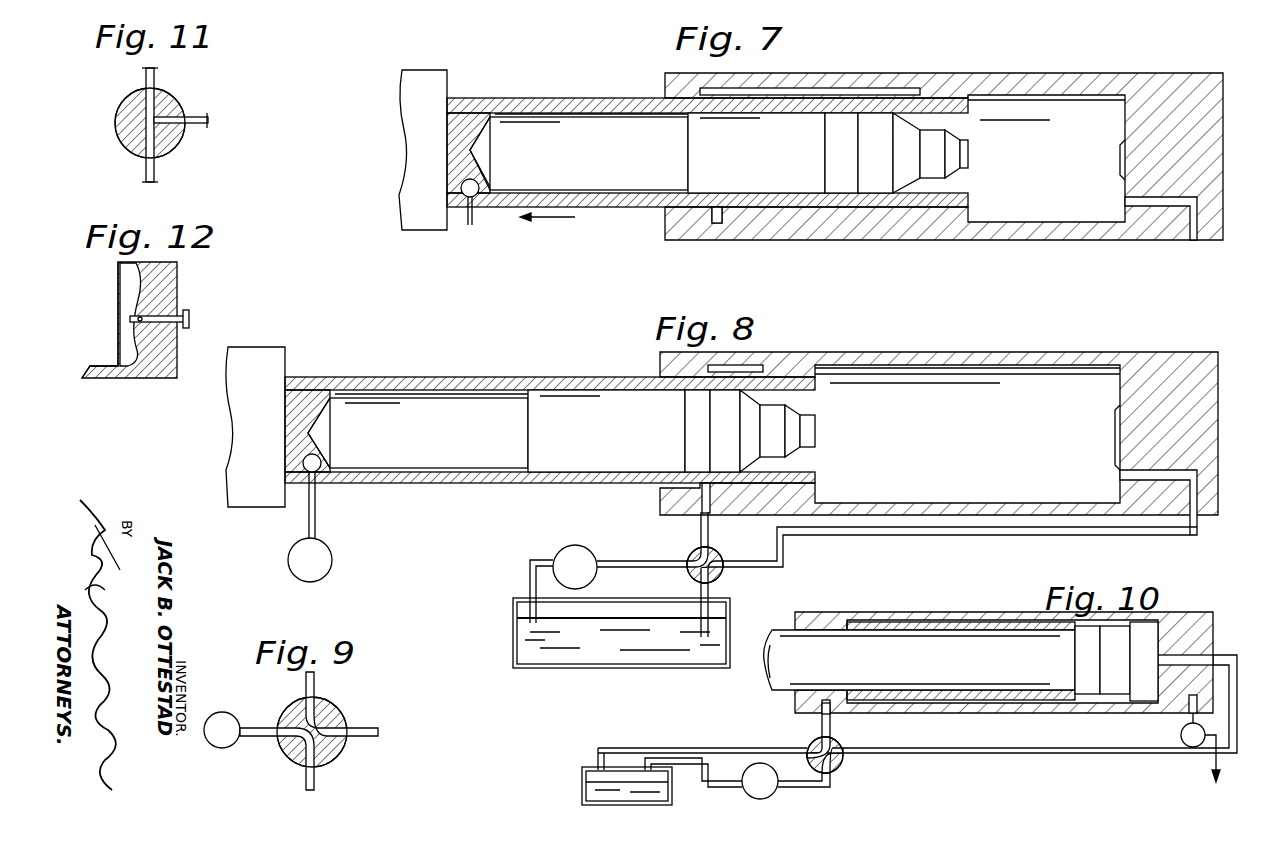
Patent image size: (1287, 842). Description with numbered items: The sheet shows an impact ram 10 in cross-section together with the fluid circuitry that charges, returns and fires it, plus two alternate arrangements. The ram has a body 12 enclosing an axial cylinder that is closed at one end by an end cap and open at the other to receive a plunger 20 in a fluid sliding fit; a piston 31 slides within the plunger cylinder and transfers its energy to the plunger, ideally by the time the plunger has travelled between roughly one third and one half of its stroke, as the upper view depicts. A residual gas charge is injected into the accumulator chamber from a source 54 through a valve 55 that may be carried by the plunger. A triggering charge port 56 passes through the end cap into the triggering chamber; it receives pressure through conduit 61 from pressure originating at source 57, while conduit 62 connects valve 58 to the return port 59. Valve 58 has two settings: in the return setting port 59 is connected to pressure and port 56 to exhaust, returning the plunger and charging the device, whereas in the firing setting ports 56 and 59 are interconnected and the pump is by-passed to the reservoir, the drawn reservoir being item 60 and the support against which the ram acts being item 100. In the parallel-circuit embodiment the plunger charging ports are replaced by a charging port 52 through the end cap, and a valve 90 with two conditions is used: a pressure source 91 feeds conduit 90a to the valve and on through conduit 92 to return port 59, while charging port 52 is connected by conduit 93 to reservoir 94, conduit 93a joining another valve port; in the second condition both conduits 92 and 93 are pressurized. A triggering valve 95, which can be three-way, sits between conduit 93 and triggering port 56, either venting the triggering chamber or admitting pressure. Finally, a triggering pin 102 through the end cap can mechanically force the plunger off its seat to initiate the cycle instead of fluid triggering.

In FIG. 7, the impact ram 10 is at (365, 115).
In FIG. 8, the impact ram 10 is at (378, 340).
In FIG. 7, the body 12 is at (828, 240).
In FIG. 8, the body 12 is at (939, 433).
In FIG. 10, the body 12 is at (1004, 662).
In FIG. 12, the body 12 is at (180, 274).
In FIG. 7, the plunger 20 is at (620, 208).
In FIG. 8, the plunger 20 is at (550, 430).
In FIG. 10, the plunger 20 is at (961, 673).
In FIG. 8, the piston 31 is at (680, 418).
In FIG. 10, the charging port 52 is at (1198, 655).
In FIG. 8, the source 54 is at (333, 560).
In FIG. 8, the valve 55 is at (330, 480).
In FIG. 8, the triggering charge port 56 is at (1203, 470).
In FIG. 10, the triggering charge port 56 is at (1225, 745).
In FIG. 8, the source 57 is at (562, 548).
In FIG. 9, the source 57 is at (210, 748).
In FIG. 8, the valve 58 is at (690, 560).
In FIG. 9, the valve 58 is at (310, 731).
In FIG. 7, the return port 59 is at (717, 223).
In FIG. 8, the return port 59 is at (712, 505).
In FIG. 10, the return port 59 is at (832, 714).
In FIG. 8, the reservoir 60 is at (712, 606).
In FIG. 9, the reservoir 60 is at (316, 778).
In FIG. 8, the conduit 61 is at (918, 536).
In FIG. 9, the conduit 61 is at (374, 738).
In FIG. 8, the conduit 62 is at (699, 530).
In FIG. 9, the conduit 62 is at (316, 682).
In FIG. 10, the valve 90 is at (838, 762).
In FIG. 11, the valve 90 is at (167, 127).
In FIG. 10, the conduit 90a is at (832, 774).
In FIG. 11, the conduit 90a is at (156, 172).
In FIG. 10, the pressure source 91 is at (778, 790).
In FIG. 10, the conduit 92 is at (820, 725).
In FIG. 11, the conduit 92 is at (145, 75).
In FIG. 10, the conduit 93 is at (972, 752).
In FIG. 11, the conduit 93 is at (205, 128).
In FIG. 10, the conduit 93a is at (742, 748).
In FIG. 10, the reservoir 94 is at (582, 782).
In FIG. 10, the triggering valve 95 is at (1180, 735).
In FIG. 7, the support wall 100 is at (417, 232).
In FIG. 8, the support wall 100 is at (267, 509).
In FIG. 12, the triggering pin 102 is at (190, 318).